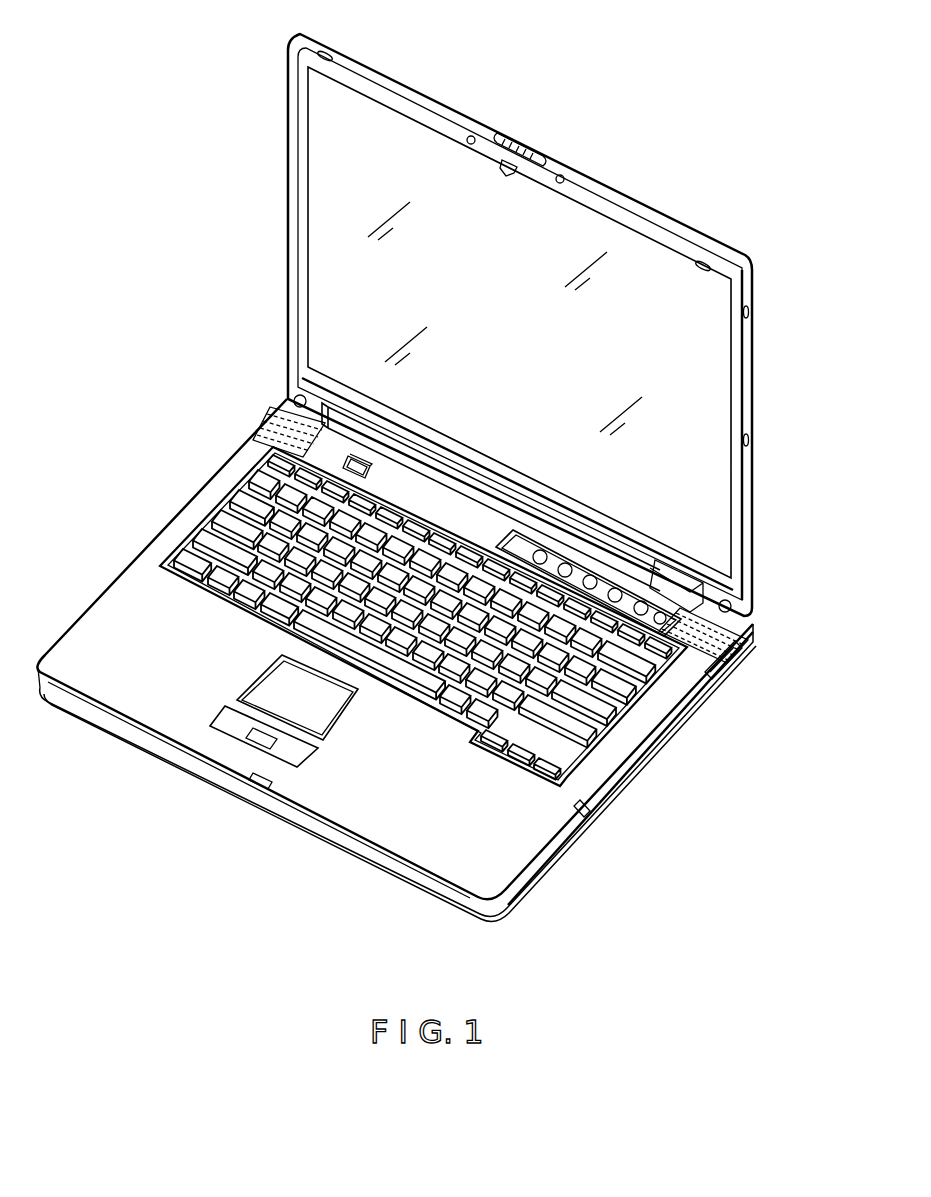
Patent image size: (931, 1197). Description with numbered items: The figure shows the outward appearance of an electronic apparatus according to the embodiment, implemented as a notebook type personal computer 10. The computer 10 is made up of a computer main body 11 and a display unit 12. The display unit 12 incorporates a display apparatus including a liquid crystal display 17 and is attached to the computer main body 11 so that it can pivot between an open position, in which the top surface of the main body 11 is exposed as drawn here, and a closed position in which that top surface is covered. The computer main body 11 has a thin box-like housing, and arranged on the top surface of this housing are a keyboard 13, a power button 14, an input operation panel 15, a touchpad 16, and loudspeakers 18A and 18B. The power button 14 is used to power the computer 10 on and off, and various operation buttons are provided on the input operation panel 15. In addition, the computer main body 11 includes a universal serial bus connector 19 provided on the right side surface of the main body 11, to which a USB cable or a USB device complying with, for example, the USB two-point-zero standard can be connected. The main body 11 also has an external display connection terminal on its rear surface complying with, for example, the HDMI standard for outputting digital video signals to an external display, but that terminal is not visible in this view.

The notebook type personal computer 10 is at (429, 477).
The computer main body 11 is at (523, 880).
The display unit 12 is at (549, 325).
The keyboard 13 is at (560, 724).
The power button 14 is at (345, 458).
The input operation panel 15 is at (605, 592).
The touchpad 16 is at (260, 703).
The liquid crystal display (LCD) 17 is at (700, 350).
The loudspeaker 18A is at (285, 413).
The loudspeaker 18B is at (718, 629).
The universal serial bus (USB) connector 19 is at (726, 664).